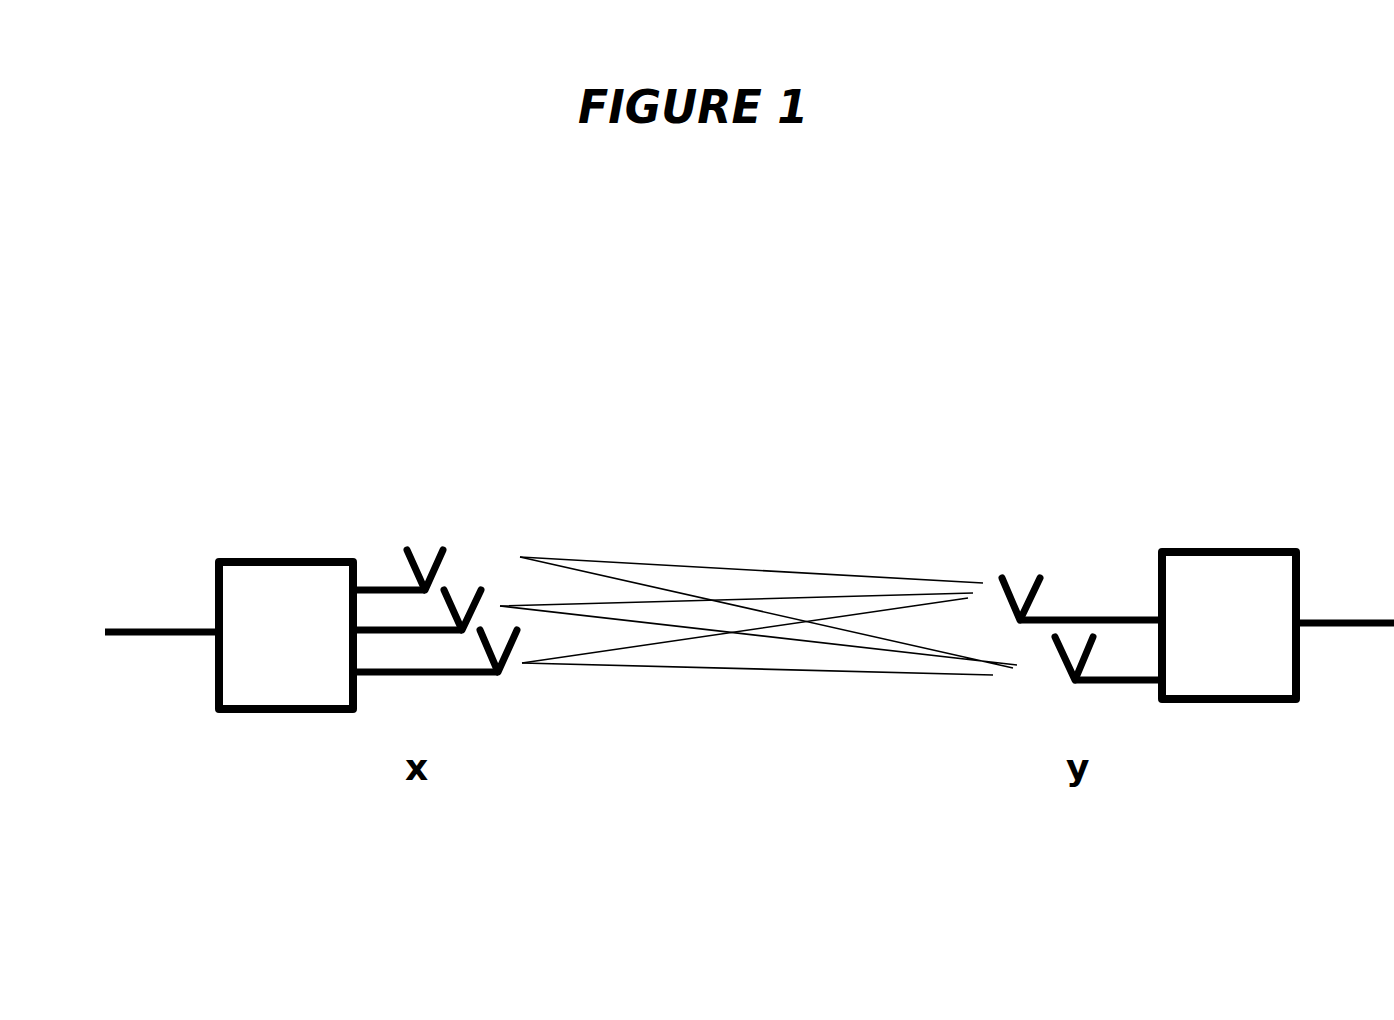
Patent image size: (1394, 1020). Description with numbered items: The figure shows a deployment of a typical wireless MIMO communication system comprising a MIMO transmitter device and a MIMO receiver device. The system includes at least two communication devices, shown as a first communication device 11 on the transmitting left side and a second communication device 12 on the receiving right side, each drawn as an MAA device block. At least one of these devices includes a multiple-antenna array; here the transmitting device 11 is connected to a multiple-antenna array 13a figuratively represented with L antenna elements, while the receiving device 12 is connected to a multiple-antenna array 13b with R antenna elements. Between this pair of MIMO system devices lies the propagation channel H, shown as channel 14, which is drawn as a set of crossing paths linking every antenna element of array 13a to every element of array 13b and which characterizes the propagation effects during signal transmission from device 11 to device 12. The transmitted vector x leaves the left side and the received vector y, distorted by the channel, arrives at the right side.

The communication device 11 is at (344, 545).
The communication device 12 is at (1272, 537).
The multiple-antenna array 13a is at (527, 657).
The multiple-antenna array 13b is at (1046, 560).
The propagation channel H 14 is at (784, 563).